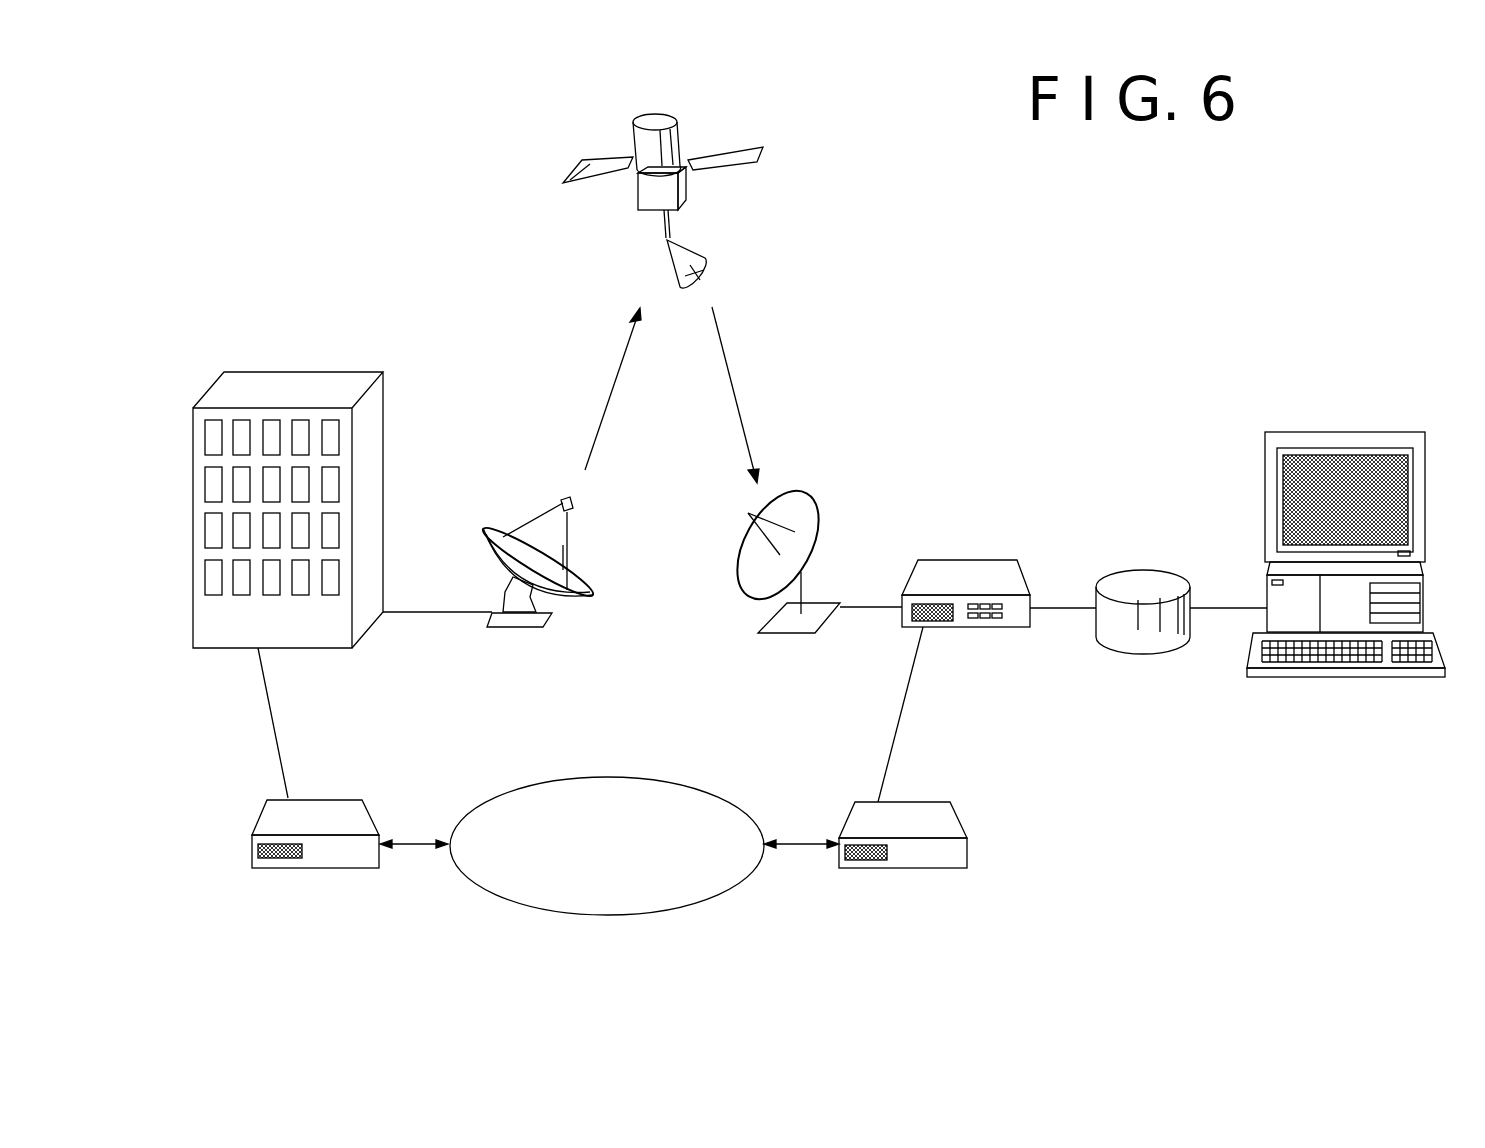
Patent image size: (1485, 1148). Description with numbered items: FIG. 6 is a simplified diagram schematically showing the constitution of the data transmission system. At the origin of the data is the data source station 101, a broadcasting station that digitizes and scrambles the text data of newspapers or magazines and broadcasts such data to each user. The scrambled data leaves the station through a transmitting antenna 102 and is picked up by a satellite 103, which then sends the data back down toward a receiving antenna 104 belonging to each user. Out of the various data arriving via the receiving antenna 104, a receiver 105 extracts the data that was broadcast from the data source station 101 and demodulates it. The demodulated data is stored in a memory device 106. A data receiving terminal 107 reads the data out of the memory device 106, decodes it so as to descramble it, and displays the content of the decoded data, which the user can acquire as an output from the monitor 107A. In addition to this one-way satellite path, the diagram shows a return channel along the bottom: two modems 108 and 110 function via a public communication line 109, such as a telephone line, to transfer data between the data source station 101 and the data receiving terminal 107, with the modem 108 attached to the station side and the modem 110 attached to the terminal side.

The data source station 101 is at (318, 372).
The transmitting antenna 102 is at (493, 527).
The satellite 103 is at (583, 162).
The receiving antenna 104 is at (827, 503).
The receiver 105 is at (962, 560).
The memory device 106 is at (1128, 572).
The data receiving terminal 107 is at (1306, 521).
The monitor 107A is at (1283, 480).
The modem 108 is at (348, 798).
The public communication line 109 is at (713, 793).
The modem 110 is at (958, 810).